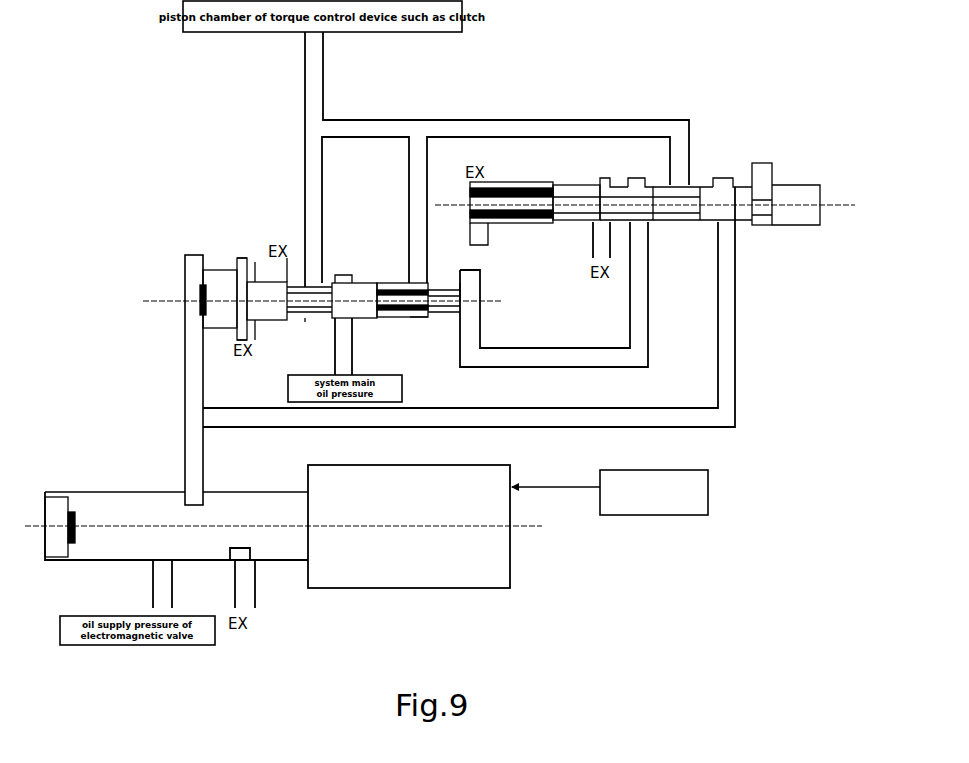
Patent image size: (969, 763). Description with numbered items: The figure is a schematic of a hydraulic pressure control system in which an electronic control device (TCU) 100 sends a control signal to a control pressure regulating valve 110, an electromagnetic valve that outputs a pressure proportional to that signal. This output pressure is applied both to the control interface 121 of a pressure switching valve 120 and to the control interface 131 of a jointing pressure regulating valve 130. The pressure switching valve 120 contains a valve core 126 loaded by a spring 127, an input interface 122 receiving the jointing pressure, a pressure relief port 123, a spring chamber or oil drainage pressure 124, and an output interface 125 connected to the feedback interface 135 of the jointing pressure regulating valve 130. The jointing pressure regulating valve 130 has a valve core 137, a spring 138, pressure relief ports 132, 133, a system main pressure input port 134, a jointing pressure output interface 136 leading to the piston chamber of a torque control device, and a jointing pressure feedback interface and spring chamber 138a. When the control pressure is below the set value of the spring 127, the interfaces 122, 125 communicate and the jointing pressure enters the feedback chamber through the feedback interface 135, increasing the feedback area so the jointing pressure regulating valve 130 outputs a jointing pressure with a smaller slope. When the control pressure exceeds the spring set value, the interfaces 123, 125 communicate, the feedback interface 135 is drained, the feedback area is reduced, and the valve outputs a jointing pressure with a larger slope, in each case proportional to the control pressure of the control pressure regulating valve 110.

The electronic control device (TCU) 100 is at (648, 504).
The control pressure regulating valve 110 is at (487, 517).
The pressure switching valve 120 is at (822, 198).
The control interface 121 is at (733, 185).
The input interface 122 is at (668, 230).
The pressure relief port 123 is at (594, 180).
The spring chamber or oil drainage pressure 124 is at (480, 249).
The output interface 125 is at (643, 180).
The valve core 126 is at (650, 216).
The spring 127 is at (540, 186).
The jointing pressure regulating valve 130 is at (180, 302).
The control interface 131 is at (198, 263).
The pressure relief port 132 is at (243, 260).
The pressure relief port 133 is at (280, 327).
The system main pressure input port 134 is at (345, 272).
The feedback interface 135 is at (473, 304).
The jointing pressure output interface 136 is at (317, 320).
The valve core 137 is at (328, 283).
The spring 138 is at (398, 320).
The jointing pressure feedback interface and spring chamber 138a is at (420, 320).